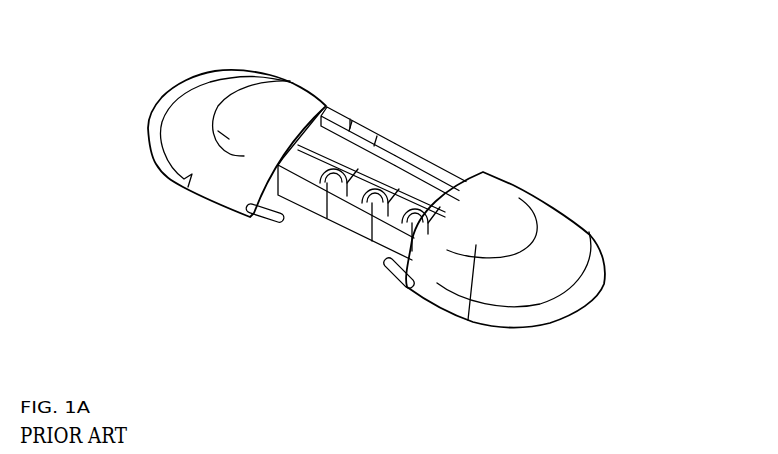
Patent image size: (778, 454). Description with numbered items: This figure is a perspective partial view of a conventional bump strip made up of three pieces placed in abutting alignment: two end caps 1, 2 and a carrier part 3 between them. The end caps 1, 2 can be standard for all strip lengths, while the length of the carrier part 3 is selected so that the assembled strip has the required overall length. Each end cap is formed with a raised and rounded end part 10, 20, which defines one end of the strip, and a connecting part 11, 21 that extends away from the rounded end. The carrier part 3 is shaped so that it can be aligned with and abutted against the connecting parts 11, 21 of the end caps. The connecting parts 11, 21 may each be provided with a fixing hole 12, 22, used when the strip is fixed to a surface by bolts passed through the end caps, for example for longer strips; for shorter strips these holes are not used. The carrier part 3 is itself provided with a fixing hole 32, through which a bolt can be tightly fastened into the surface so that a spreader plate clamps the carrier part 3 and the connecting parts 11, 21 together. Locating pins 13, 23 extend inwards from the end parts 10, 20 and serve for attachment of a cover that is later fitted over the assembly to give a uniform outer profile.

The end cap 1 is at (247, 78).
The raised and rounded end part 10 is at (147, 122).
The connecting part 11 is at (363, 128).
The fixing hole 12 is at (355, 160).
The locating pin 13 is at (267, 220).
The end cap 2 is at (510, 192).
The raised and rounded end part 20 is at (598, 300).
The connecting part 21 is at (440, 170).
The fixing hole 22 is at (401, 222).
The locating pin 23 is at (398, 266).
The carrier part 3 is at (400, 153).
The fixing hole 32 is at (362, 210).